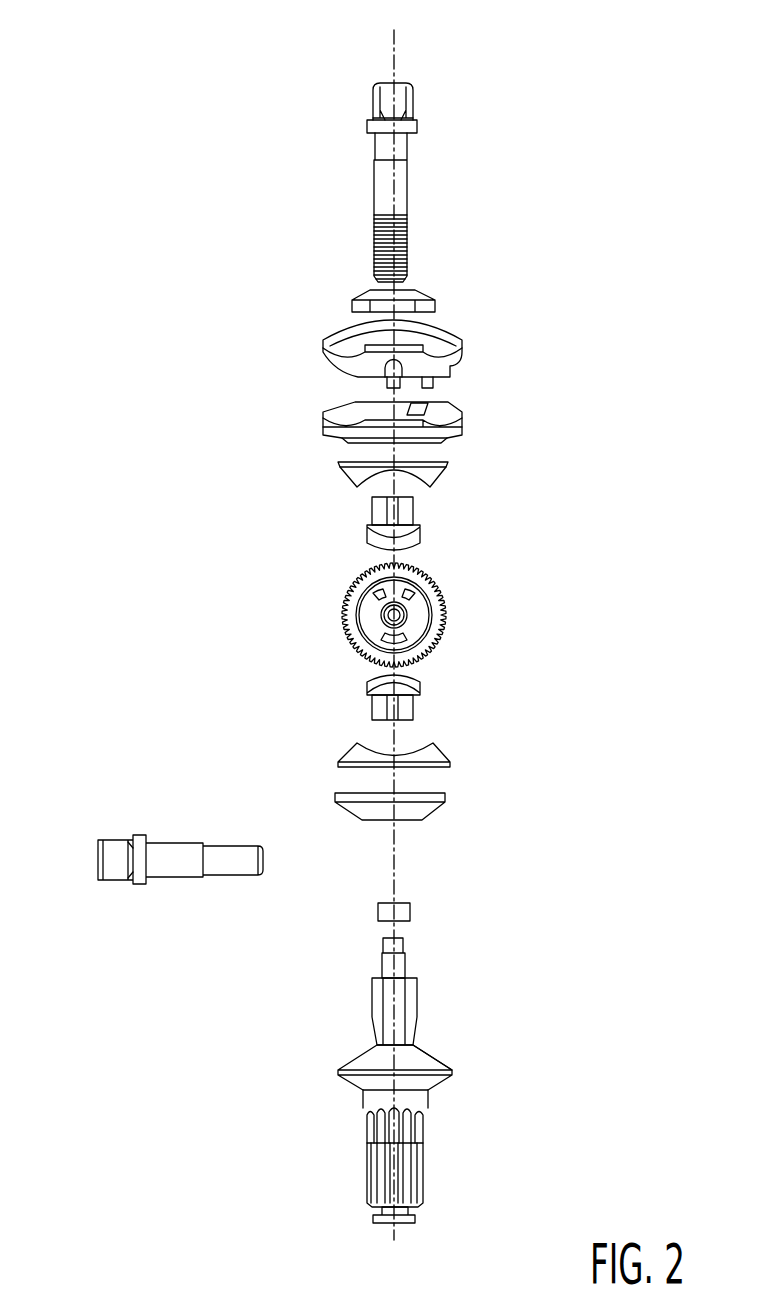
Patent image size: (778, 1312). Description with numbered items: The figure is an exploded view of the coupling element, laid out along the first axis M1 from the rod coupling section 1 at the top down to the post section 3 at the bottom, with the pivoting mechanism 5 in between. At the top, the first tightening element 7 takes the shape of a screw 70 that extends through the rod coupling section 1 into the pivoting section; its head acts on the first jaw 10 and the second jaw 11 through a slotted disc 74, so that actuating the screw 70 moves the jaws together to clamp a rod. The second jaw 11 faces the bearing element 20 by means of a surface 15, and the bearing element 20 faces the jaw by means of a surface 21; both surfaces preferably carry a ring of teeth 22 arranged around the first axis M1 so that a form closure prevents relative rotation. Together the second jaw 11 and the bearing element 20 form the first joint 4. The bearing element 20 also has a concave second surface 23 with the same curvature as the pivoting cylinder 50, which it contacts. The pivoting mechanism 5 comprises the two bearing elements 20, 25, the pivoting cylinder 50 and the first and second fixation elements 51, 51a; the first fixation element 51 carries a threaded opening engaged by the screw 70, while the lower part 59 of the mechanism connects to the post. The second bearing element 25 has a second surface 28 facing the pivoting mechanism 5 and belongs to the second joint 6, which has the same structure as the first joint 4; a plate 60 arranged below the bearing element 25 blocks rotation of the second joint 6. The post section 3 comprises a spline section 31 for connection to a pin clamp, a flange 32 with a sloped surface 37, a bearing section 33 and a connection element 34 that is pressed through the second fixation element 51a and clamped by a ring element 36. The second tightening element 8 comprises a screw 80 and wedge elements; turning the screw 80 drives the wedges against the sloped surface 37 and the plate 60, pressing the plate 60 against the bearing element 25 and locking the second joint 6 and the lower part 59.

The first axis M1 is at (397, 55).
The first tightening element 7 is at (403, 100).
The screw 70 is at (417, 128).
The disc 74 is at (440, 300).
The rod coupling section 1 is at (437, 330).
The first jaw 10 is at (443, 357).
The second jaw 11 is at (465, 415).
The surface 15 is at (368, 420).
The first joint 4 is at (350, 453).
The surface 21 is at (348, 470).
The teeth 22 is at (452, 456).
The bearing element 20 is at (443, 476).
The second surface 23 is at (396, 473).
The first fixation element 51 is at (380, 512).
The pivoting mechanism 5 is at (355, 625).
The pivoting cylinder 50 is at (444, 612).
The lower part 59 is at (430, 657).
The second fixation element 51a is at (378, 705).
The second surface 28 is at (396, 755).
The bearing element 25 is at (430, 755).
The second joint 6 is at (357, 781).
The plate 60 is at (422, 810).
The second tightening element 8 is at (110, 860).
The screw 80 is at (125, 858).
The ring element 36 is at (404, 912).
The connection element 34 is at (390, 943).
The bearing section 33 is at (383, 1022).
The sloped surface 37 is at (433, 1053).
The flange 32 is at (365, 1065).
The post section 3 is at (382, 1162).
The spline section 31 is at (410, 1187).